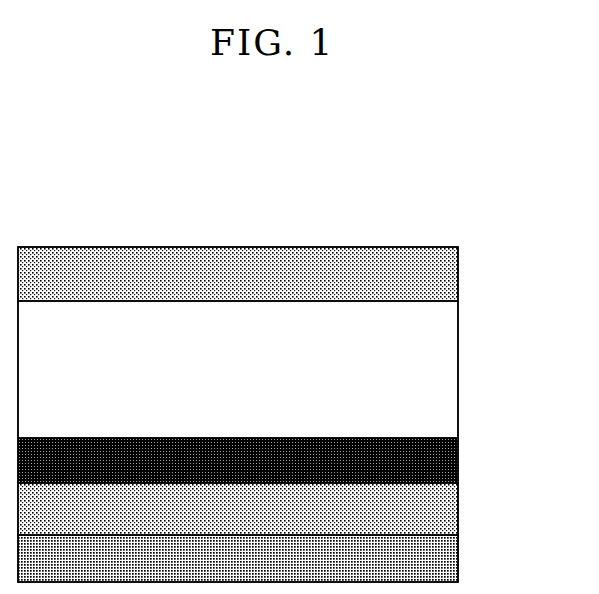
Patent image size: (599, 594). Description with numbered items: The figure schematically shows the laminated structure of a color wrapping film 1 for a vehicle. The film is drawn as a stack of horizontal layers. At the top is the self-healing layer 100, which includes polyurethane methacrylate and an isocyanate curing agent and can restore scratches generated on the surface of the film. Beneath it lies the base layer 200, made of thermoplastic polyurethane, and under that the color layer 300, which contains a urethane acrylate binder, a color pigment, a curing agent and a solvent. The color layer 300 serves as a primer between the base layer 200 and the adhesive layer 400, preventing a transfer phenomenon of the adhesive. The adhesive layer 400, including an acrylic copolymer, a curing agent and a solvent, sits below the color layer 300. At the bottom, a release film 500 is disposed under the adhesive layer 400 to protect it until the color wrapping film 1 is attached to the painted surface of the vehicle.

The color wrapping film for a vehicle 1 is at (466, 209).
The self-healing layer 100 is at (438, 275).
The base layer 200 is at (437, 370).
The color layer 300 is at (458, 458).
The adhesive layer 400 is at (440, 510).
The release film 500 is at (440, 562).